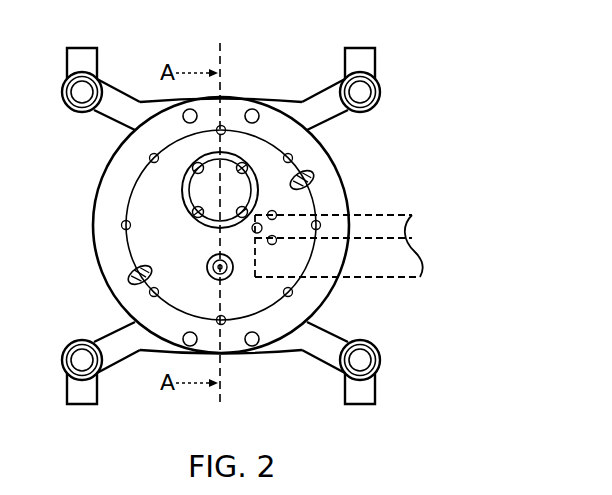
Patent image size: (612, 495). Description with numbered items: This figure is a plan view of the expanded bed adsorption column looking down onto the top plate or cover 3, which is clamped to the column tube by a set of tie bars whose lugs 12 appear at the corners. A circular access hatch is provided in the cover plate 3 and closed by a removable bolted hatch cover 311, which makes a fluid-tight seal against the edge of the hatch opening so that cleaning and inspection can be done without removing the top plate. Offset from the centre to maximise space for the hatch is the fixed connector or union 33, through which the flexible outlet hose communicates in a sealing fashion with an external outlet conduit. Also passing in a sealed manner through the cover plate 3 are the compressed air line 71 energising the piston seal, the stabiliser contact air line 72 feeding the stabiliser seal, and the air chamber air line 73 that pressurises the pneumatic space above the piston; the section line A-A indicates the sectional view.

The top plate or cover 3 is at (143, 193).
The hatch cover 311 is at (223, 180).
The mounting arm 12 is at (323, 93).
The fixed connector or union 33 is at (207, 268).
The compressed air line 71 is at (358, 213).
The stabiliser contact air line 72 is at (378, 238).
The air chamber air line 73 is at (372, 277).